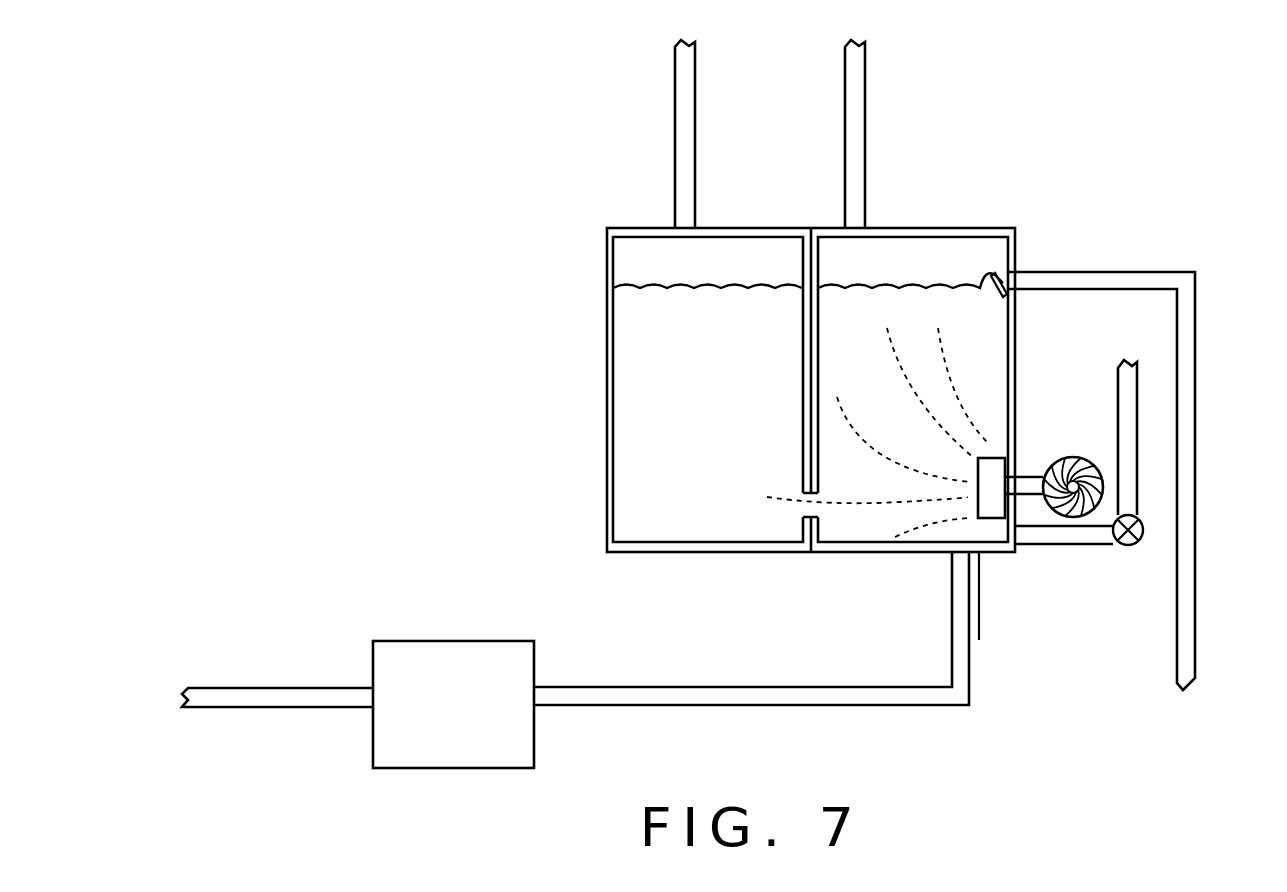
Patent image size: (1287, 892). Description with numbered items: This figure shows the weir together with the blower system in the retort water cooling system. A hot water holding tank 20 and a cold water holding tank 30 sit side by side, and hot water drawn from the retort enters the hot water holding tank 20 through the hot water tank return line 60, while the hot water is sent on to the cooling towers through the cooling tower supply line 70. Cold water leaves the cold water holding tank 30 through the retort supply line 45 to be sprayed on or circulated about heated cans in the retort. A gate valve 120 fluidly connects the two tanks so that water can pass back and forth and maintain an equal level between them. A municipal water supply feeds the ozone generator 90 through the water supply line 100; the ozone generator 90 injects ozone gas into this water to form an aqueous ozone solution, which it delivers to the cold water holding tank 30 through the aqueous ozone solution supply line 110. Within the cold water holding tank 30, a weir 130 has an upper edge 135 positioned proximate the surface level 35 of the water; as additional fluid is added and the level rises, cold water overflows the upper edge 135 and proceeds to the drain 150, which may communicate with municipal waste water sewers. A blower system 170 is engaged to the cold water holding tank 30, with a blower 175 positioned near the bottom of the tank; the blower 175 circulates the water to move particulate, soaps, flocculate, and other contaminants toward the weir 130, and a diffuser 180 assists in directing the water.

The hot water holding tank 20 is at (607, 467).
The cold water holding tank 30 is at (979, 640).
The surface level 35 is at (905, 283).
The retort supply line 45 is at (1138, 410).
The hot water tank return line 60 is at (843, 190).
The cooling tower supply line 70 is at (675, 168).
The ozone generator 90 is at (510, 768).
The water supply line 100 is at (281, 707).
The aqueous ozone solution supply line 110 is at (665, 705).
The gate valve 120 is at (807, 510).
The weir 130 is at (1008, 285).
The upper edge 135 is at (994, 276).
The drain 150 is at (1138, 272).
The blower system 170 is at (1061, 516).
The blower 175 is at (1101, 477).
The diffuser 180 is at (992, 520).